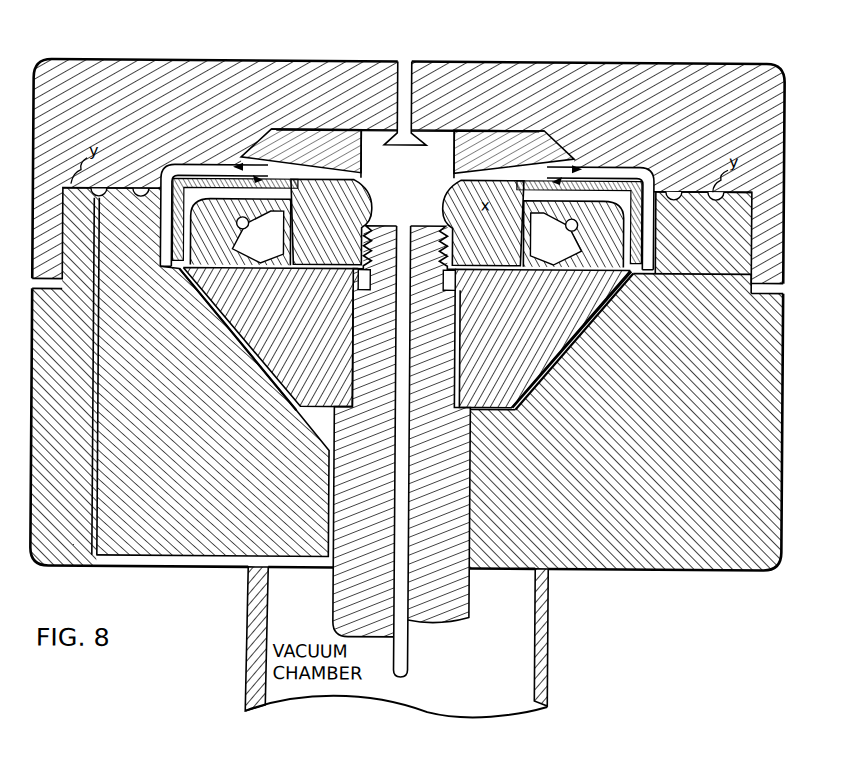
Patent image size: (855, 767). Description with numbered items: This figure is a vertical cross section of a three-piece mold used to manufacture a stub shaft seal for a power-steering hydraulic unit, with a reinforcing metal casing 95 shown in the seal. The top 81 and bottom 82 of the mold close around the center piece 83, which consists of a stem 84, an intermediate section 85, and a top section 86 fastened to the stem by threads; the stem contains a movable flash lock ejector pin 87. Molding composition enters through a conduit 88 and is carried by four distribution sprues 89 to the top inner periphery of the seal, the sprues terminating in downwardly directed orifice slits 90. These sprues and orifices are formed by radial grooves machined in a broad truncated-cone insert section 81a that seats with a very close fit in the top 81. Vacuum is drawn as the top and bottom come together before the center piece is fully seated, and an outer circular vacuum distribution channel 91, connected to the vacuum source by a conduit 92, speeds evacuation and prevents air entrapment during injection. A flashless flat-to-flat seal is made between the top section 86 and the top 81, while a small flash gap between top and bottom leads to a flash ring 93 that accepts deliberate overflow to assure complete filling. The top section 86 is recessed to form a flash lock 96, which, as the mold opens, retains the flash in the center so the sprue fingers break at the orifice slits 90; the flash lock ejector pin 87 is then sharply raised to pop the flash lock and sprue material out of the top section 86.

The top 81 is at (408, 171).
The insert section 81a is at (565, 142).
The bottom 82 is at (407, 378).
The center piece 83 is at (471, 580).
The stem 84 is at (452, 467).
The intermediate section 85 is at (550, 327).
The top section 86 is at (508, 272).
The flash lock ejector pin 87 is at (410, 662).
The conduit 88 is at (412, 59).
The distribution sprues 89 is at (312, 130).
The orifice slits 90 is at (230, 167).
The vacuum distribution channel 91 is at (130, 200).
The conduit 92 is at (100, 503).
The flash ring 93 is at (678, 208).
The reinforcing metal casing 95 is at (636, 232).
The flash lock 96 is at (352, 197).